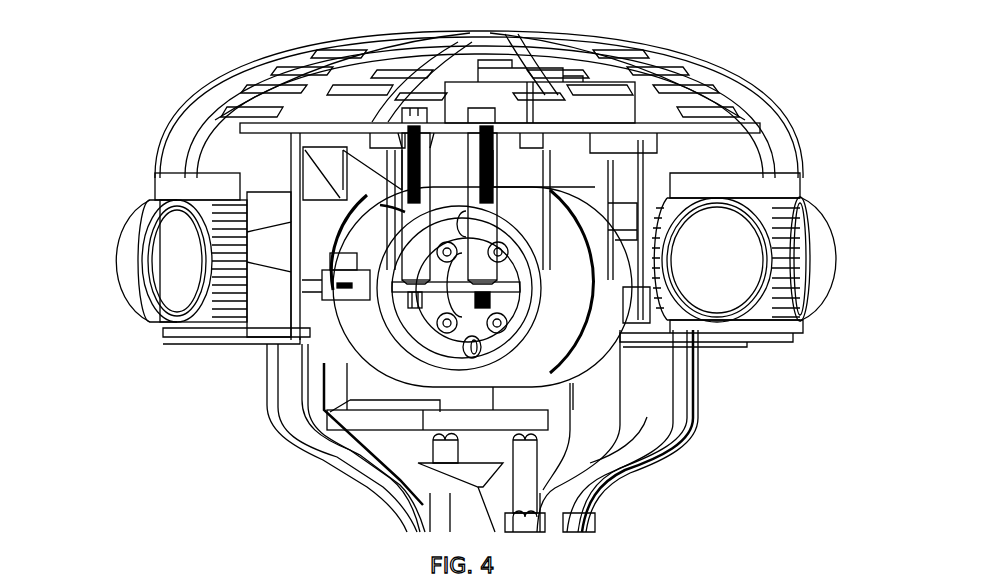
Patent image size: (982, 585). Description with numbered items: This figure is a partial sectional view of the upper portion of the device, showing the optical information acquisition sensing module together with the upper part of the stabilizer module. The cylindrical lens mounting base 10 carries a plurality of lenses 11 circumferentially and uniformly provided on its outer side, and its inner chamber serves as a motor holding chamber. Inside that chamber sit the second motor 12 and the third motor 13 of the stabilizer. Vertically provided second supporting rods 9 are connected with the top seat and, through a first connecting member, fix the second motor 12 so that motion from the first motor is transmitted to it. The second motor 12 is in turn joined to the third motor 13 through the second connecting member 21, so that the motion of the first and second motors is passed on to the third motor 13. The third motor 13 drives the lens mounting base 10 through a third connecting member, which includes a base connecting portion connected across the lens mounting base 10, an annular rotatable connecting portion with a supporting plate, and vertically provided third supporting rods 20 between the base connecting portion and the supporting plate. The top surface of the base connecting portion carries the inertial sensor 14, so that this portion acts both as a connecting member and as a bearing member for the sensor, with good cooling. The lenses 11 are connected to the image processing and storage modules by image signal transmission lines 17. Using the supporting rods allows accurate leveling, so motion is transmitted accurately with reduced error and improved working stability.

The second supporting rod 9 is at (490, 420).
The lens mounting base 10 is at (765, 325).
The lens 11 is at (163, 258).
The second motor 12 is at (393, 247).
The third motor 13 is at (553, 228).
The inertial sensor 14 is at (590, 107).
The image signal transmission line 17 is at (267, 373).
The third supporting rod 20 is at (405, 205).
The second connecting member 21 is at (368, 300).